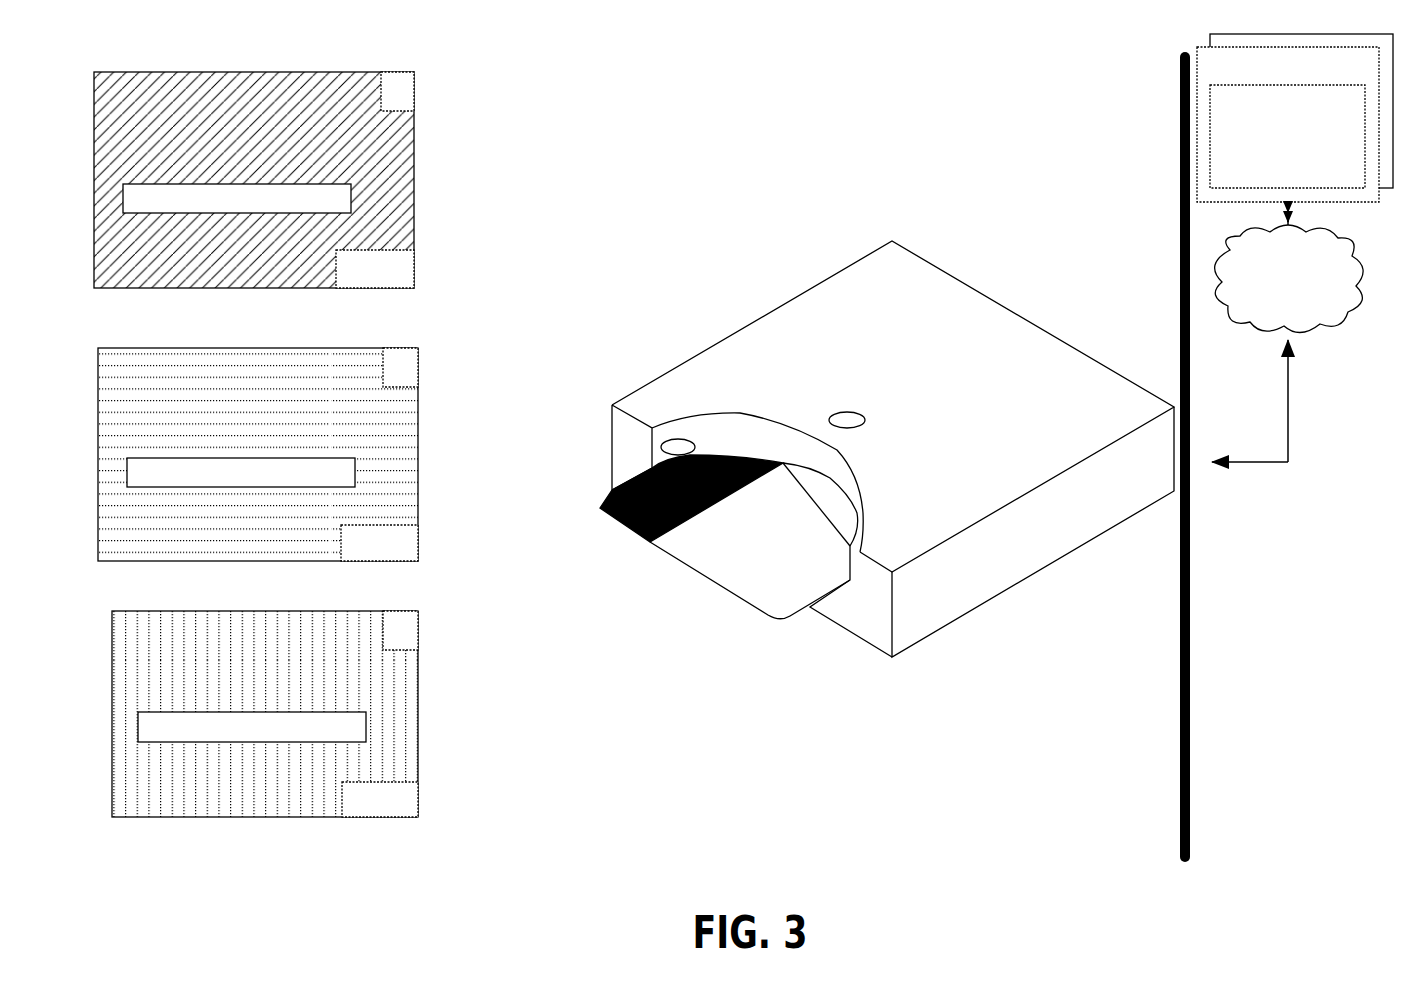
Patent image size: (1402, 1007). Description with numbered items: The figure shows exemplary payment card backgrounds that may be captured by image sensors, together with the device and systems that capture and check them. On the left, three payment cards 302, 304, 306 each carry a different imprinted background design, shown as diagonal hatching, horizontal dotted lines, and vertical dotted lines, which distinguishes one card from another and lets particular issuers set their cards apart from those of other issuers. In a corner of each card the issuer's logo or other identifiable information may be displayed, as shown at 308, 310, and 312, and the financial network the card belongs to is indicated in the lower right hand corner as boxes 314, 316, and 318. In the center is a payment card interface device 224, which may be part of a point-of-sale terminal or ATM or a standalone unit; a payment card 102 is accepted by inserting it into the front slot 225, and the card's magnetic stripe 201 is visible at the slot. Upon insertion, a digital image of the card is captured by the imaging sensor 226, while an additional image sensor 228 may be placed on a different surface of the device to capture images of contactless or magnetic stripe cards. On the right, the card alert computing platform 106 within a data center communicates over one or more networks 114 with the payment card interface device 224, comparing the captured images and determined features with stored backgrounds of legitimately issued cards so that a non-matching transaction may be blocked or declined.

The payment card 102 is at (873, 449).
The card alert computing platform 106 is at (1273, 186).
The network 114 is at (1274, 305).
The magnetic stripe 201 is at (623, 532).
The payment card interface device 224 is at (745, 342).
The front slot 225 is at (783, 461).
The imaging sensor 226 is at (843, 413).
The image sensor 228 is at (666, 442).
The payment card 302 is at (309, 158).
The payment card 304 is at (315, 436).
The payment card 306 is at (322, 695).
The issuer logo area 308 is at (418, 86).
The issuer logo area 310 is at (421, 360).
The issuer logo area 312 is at (421, 625).
The financial network box 314 is at (418, 266).
The financial network box 316 is at (423, 536).
The financial network box 318 is at (408, 788).